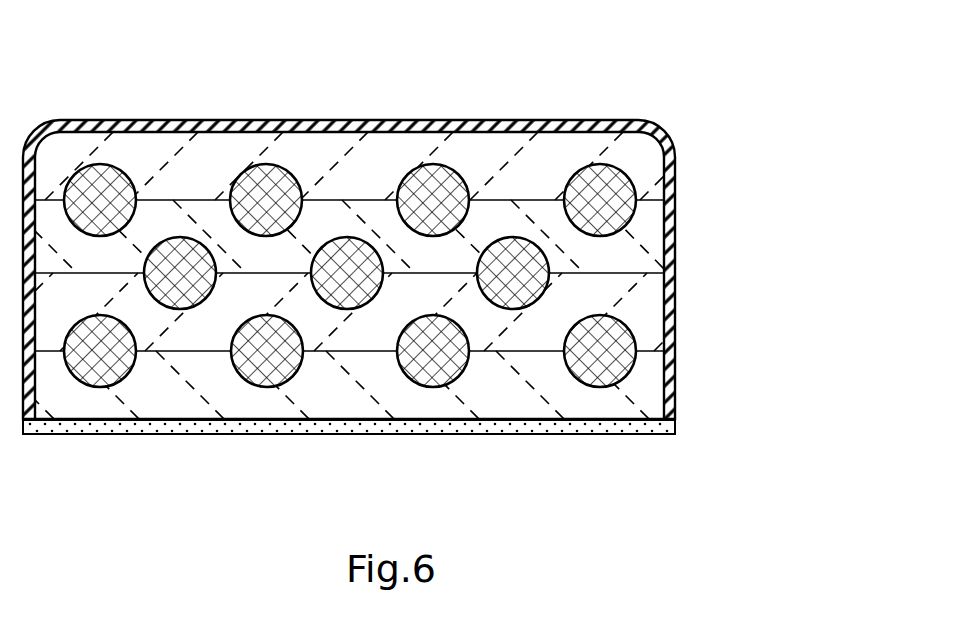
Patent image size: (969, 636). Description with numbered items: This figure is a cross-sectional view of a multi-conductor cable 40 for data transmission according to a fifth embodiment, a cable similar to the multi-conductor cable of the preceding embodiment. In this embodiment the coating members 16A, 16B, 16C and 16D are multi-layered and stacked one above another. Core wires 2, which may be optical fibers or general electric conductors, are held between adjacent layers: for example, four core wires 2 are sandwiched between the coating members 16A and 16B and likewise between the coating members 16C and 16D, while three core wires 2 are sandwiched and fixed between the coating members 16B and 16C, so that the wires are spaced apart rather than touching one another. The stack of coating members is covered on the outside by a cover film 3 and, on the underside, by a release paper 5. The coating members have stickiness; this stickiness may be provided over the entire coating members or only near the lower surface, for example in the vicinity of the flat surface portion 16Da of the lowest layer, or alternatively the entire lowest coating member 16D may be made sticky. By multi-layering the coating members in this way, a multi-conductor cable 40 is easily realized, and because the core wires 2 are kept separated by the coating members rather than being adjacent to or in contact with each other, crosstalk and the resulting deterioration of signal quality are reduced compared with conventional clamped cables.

The cable 40 is at (668, 100).
The core wire 2 is at (108, 180).
The cover film 3 is at (304, 125).
The release paper 5 is at (298, 424).
The coating member 16A is at (648, 172).
The coating member 16B is at (648, 238).
The coating member 16C is at (648, 307).
The coating member 16D is at (648, 377).
The flat surface portion 16Da is at (612, 423).